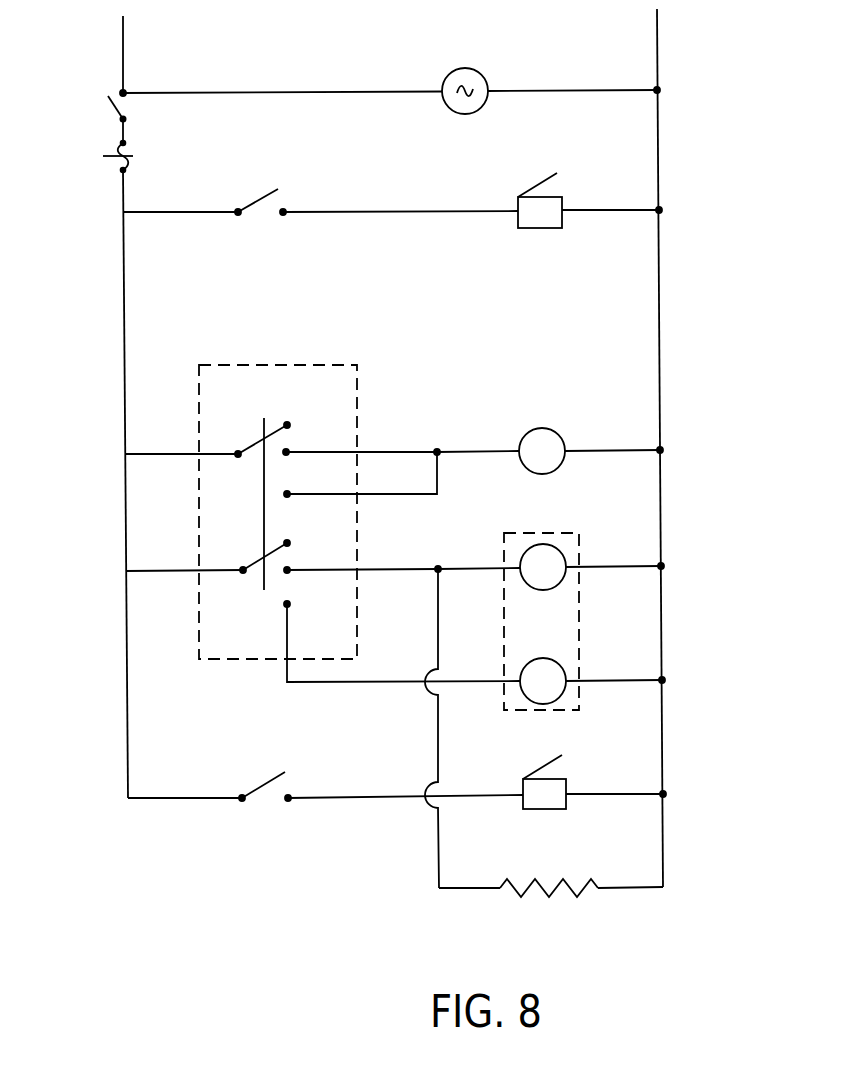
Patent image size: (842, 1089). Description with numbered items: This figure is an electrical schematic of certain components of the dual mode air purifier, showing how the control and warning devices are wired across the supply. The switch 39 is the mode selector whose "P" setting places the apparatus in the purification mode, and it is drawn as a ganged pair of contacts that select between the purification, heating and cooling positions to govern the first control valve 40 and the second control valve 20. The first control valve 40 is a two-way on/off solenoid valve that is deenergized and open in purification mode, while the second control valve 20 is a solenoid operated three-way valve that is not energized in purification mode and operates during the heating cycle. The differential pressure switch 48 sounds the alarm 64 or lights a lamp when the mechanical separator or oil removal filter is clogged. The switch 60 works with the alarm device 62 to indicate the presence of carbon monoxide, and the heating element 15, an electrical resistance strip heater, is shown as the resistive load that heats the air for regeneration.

The heating element 15 is at (566, 900).
The second control valve 20 is at (508, 530).
The switch 39 is at (360, 370).
The first control valve 40 is at (566, 457).
The differential pressure switch 48 is at (261, 210).
The switch 60 is at (270, 797).
The alarm device 62 is at (555, 793).
The alarm 64 is at (564, 196).